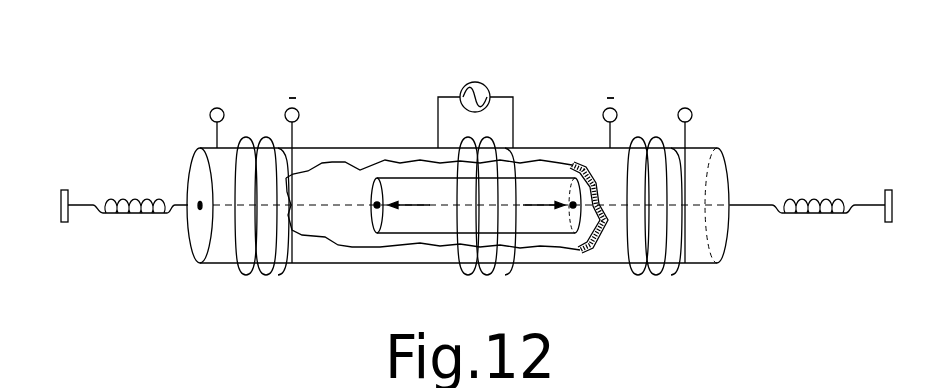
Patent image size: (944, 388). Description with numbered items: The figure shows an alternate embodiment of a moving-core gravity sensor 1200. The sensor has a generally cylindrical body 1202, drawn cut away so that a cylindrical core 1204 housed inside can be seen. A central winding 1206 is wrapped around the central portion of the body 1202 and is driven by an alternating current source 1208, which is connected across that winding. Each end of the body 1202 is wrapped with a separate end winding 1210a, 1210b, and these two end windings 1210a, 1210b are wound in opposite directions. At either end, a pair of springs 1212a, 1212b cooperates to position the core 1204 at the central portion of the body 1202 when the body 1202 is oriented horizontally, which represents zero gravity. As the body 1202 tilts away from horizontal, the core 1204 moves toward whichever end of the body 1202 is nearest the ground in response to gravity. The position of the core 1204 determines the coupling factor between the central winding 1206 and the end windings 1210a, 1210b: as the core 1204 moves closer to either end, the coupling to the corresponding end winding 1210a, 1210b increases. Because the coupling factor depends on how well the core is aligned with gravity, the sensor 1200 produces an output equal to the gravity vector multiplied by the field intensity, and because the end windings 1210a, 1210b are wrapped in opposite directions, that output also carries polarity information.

The moving-core gravity sensor 1200 is at (166, 78).
The body 1202 is at (347, 157).
The core 1204 is at (535, 188).
The central winding 1206 is at (503, 275).
The alternating current source 1208 is at (481, 84).
The end winding 1210a is at (668, 273).
The end winding 1210b is at (278, 275).
The spring 1212a is at (813, 217).
The spring 1212b is at (130, 213).